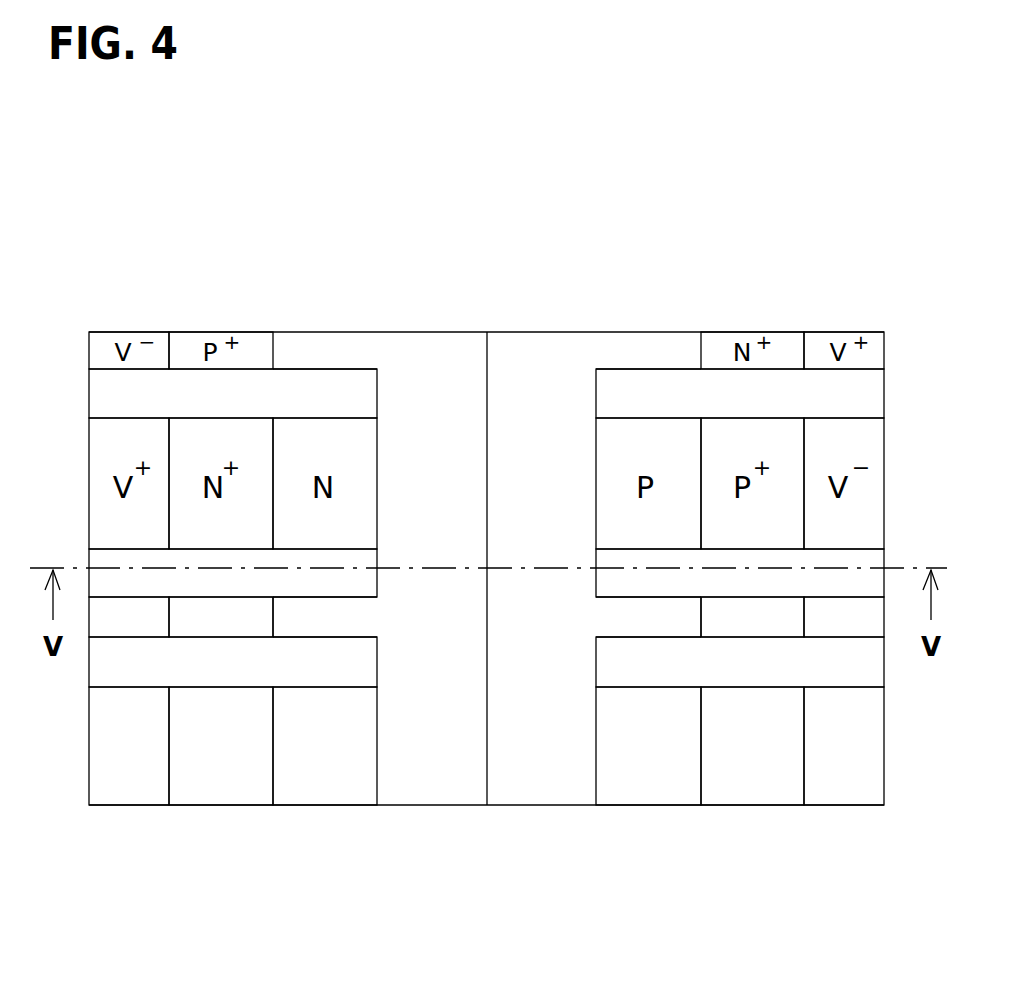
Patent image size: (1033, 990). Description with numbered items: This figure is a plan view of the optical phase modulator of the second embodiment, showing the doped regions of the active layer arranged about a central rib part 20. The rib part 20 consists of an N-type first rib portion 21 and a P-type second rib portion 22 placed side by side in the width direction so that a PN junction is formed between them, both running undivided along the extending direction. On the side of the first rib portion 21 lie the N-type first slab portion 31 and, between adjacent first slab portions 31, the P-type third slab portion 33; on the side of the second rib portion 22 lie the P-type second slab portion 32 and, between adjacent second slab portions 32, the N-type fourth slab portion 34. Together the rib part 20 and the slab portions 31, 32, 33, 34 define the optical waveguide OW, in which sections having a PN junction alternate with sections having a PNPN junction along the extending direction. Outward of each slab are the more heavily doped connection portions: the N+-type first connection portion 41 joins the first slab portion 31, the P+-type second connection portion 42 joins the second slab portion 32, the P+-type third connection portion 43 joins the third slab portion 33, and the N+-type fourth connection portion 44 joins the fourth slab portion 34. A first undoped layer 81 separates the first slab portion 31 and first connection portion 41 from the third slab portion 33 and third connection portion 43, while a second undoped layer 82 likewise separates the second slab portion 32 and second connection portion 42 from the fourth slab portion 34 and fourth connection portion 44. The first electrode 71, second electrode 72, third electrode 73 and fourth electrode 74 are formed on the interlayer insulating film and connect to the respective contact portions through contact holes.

The rib part 20 is at (486, 627).
The first rib portion 21 is at (522, 605).
The second rib portion 22 is at (433, 780).
The first slab portion 31 is at (679, 618).
The second slab portion 32 is at (355, 625).
The third slab portion 33 is at (628, 780).
The fourth slab portion 34 is at (317, 780).
The first connection portion 41 is at (785, 627).
The second connection portion 42 is at (262, 622).
The third connection portion 43 is at (737, 775).
The fourth connection portion 44 is at (208, 778).
The first electrode 71 is at (870, 627).
The second electrode 72 is at (97, 625).
The third electrode 73 is at (832, 783).
The fourth electrode 74 is at (140, 782).
The first undoped layer 81 is at (685, 667).
The second undoped layer 82 is at (283, 662).
The optical waveguide OW is at (490, 320).